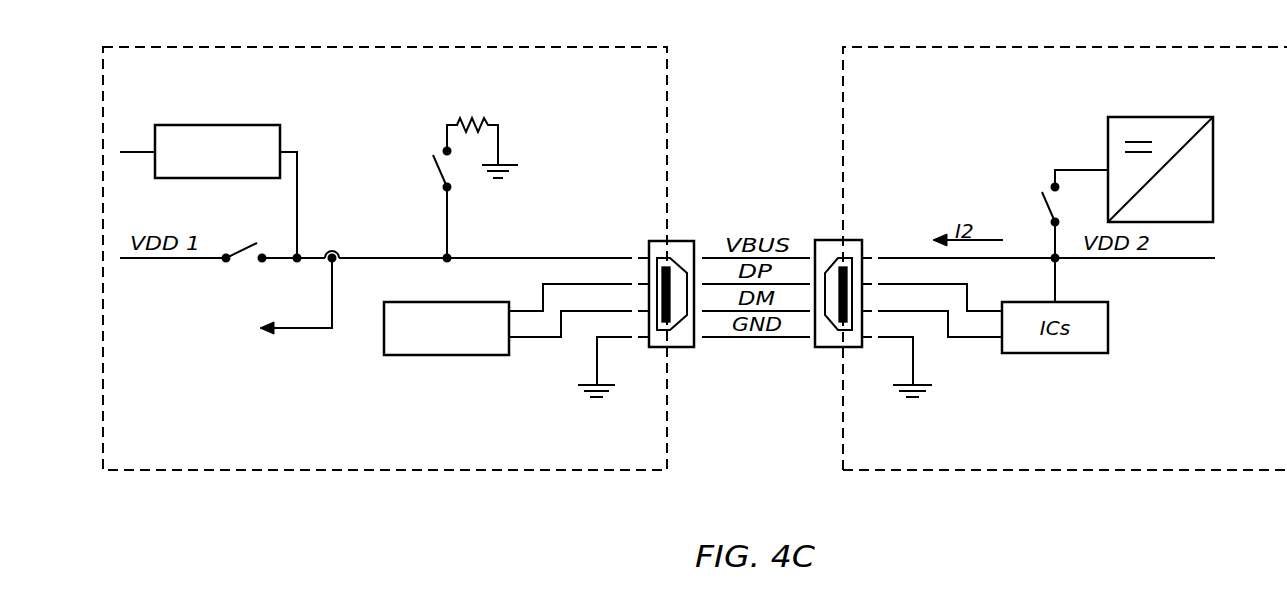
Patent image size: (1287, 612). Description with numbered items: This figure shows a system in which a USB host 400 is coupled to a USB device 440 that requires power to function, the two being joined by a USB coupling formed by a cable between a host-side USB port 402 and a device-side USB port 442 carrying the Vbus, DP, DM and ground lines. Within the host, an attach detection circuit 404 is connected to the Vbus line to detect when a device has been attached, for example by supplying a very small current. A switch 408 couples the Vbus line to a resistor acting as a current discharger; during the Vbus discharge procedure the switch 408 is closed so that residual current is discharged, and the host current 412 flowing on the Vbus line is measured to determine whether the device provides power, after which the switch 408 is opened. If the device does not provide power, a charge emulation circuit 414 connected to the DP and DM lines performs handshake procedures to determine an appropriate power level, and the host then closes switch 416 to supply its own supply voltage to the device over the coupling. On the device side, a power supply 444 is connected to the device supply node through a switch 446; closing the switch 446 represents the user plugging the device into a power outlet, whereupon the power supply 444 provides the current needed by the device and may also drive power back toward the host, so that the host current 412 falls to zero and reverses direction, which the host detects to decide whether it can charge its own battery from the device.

The USB host 400 is at (562, 47).
The host-side USB port 402 is at (660, 240).
The attach detection circuit 404 is at (227, 125).
The switch 408 is at (433, 177).
The I1 412 is at (283, 336).
The charge emulation circuit 414 is at (457, 357).
The switch 416 is at (244, 260).
The USB device 440 is at (1197, 47).
The device-side USB port 442 is at (849, 240).
The power supply 444 is at (1177, 222).
The switch 446 is at (1044, 186).